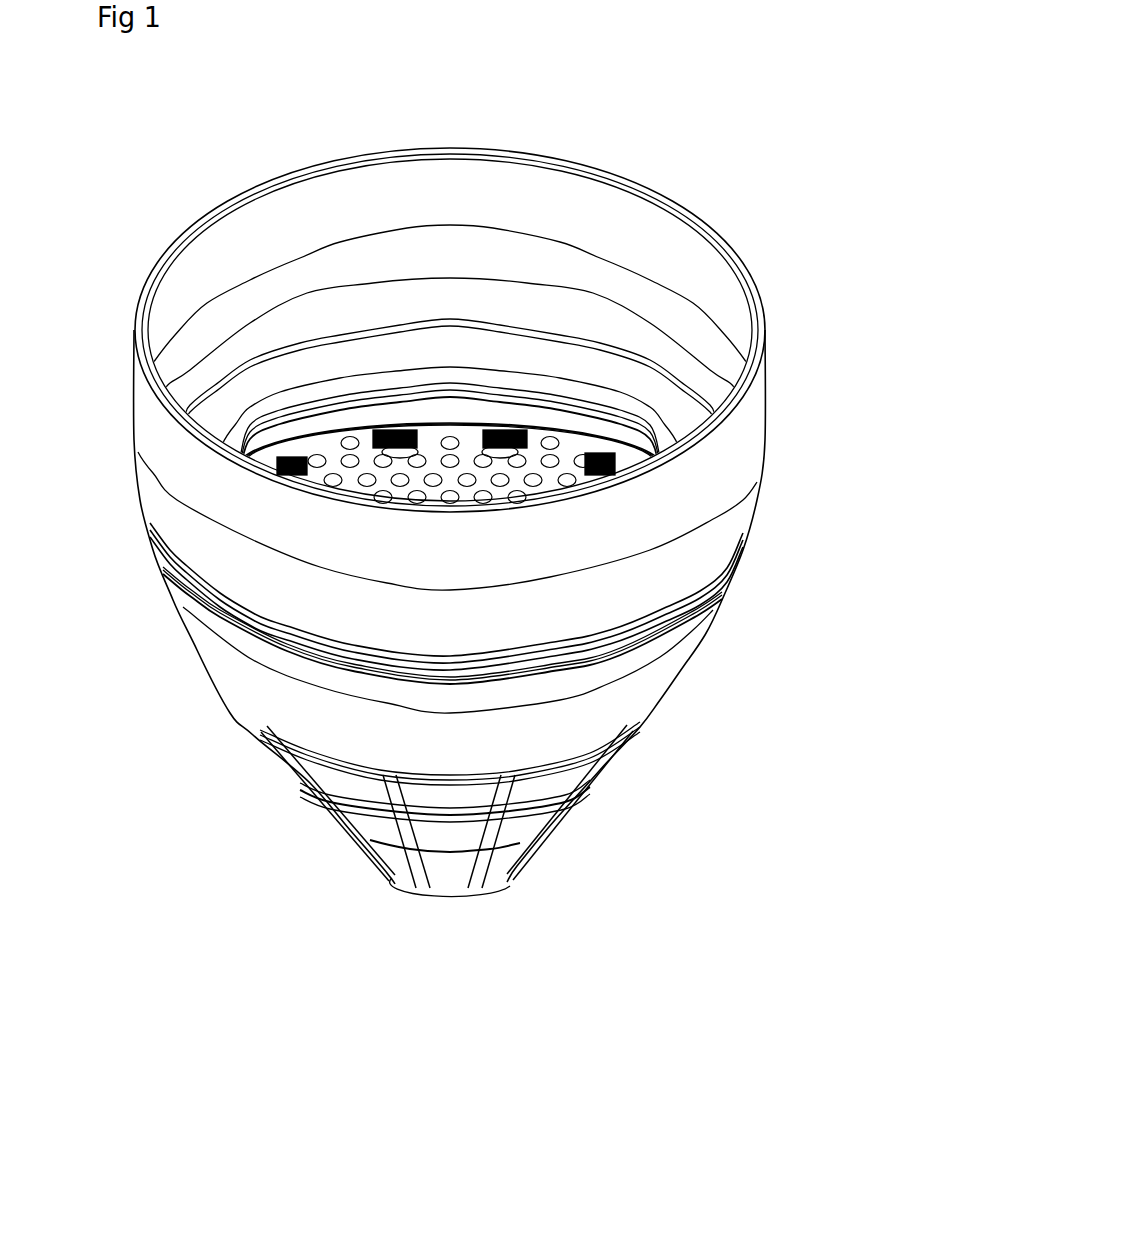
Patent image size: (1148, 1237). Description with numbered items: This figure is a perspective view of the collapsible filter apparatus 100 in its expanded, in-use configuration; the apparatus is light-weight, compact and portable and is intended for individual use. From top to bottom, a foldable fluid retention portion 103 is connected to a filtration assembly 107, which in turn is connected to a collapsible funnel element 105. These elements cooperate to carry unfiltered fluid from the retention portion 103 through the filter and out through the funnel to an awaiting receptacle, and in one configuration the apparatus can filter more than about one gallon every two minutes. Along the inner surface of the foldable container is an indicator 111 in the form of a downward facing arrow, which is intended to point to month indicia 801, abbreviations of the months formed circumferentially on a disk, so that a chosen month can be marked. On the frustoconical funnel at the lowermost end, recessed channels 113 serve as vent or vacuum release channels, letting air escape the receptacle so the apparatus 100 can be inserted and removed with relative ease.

The collapsible filter apparatus 100 is at (193, 144).
The foldable fluid retention portion 103 is at (743, 245).
The filtration assembly 107 is at (740, 603).
The collapsible funnel element 105 is at (717, 912).
The indicator 111 is at (657, 398).
The month indicia 801 is at (450, 258).
The recessed channel 113 is at (447, 861).